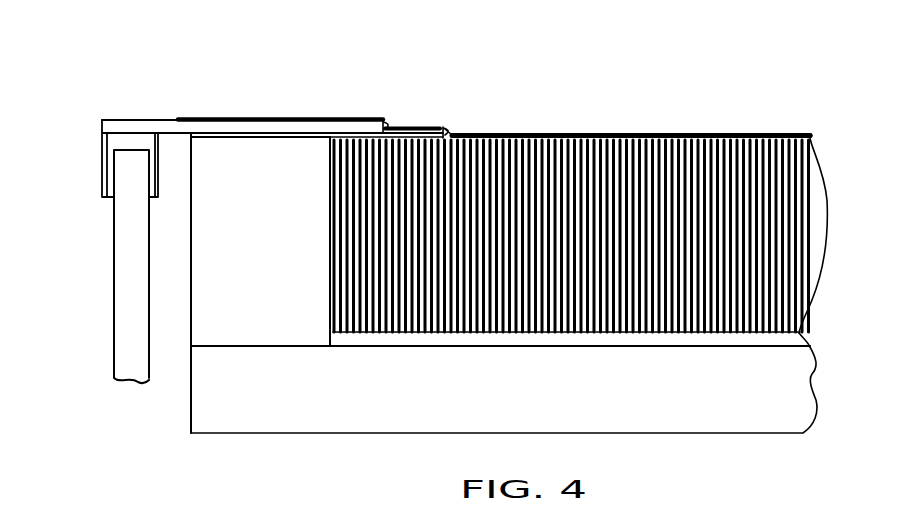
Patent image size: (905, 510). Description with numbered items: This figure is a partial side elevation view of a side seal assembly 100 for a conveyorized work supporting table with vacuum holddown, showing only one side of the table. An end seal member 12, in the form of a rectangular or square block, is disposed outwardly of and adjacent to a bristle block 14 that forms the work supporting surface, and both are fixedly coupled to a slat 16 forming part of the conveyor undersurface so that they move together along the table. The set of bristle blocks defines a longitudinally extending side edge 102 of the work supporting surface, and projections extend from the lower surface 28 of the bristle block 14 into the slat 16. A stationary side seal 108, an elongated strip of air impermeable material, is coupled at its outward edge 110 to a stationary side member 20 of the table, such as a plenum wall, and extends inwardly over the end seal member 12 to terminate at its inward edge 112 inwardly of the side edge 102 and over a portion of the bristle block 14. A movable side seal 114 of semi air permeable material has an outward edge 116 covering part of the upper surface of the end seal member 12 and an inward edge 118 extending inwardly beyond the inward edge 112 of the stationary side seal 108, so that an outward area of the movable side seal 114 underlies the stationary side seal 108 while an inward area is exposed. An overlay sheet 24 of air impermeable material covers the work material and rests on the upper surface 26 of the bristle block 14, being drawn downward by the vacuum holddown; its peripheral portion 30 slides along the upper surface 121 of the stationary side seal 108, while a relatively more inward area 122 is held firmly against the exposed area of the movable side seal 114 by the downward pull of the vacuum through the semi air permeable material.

The side seal assembly 100 is at (298, 92).
The stationary side seal 108 is at (100, 78).
The outward edge 110 is at (102, 122).
The upper surface 121 is at (160, 120).
The stationary side member 20 is at (132, 260).
The peripheral portion 30 is at (256, 117).
The inward edge 112 is at (395, 119).
The inward area 122 is at (418, 127).
The movable side seal 114 is at (437, 127).
The inward edge 118 is at (458, 127).
The outward edge 116 is at (192, 139).
The end seal member 12 is at (225, 238).
The side edge 102 is at (330, 303).
The overlay sheet 24 is at (570, 134).
The upper surface 26 is at (735, 134).
The bristle block 14 is at (778, 207).
The lower surface 28 is at (758, 346).
The slat 16 is at (375, 415).